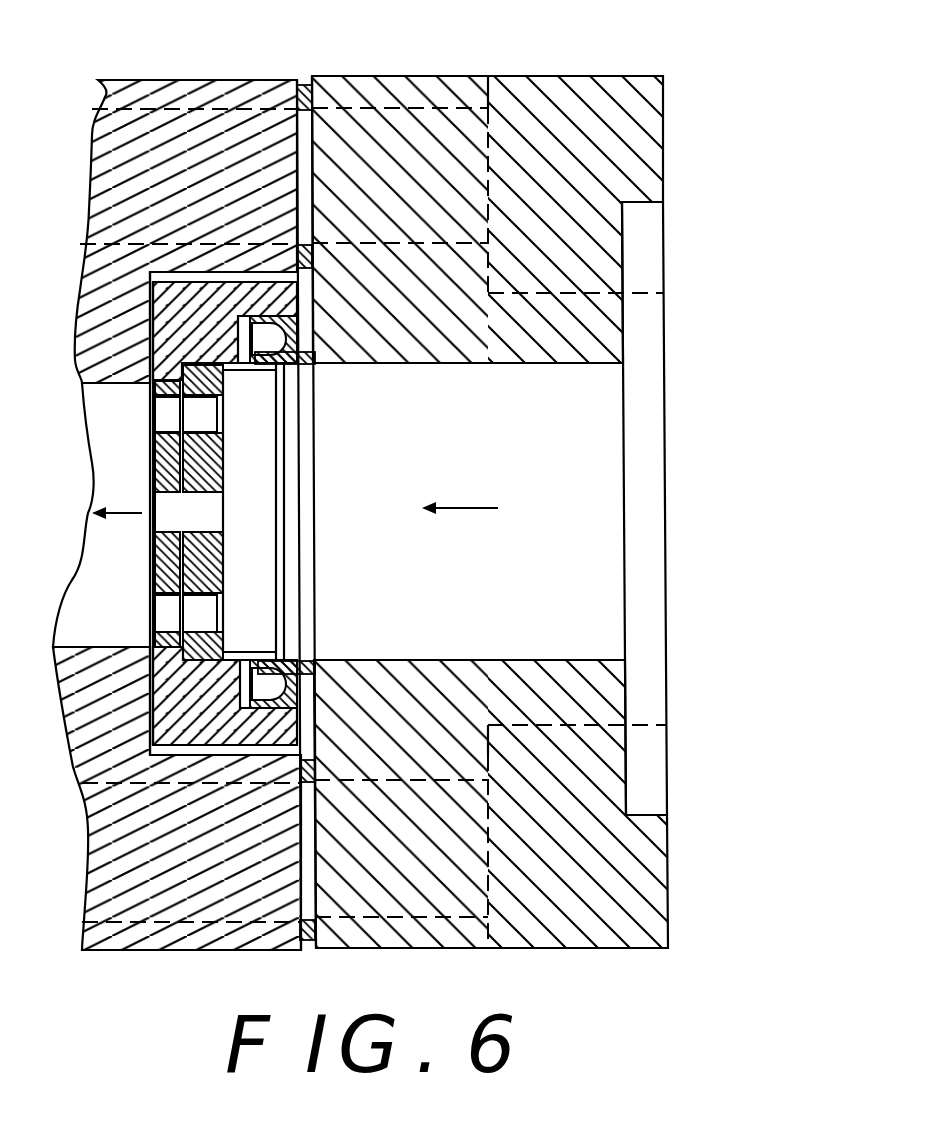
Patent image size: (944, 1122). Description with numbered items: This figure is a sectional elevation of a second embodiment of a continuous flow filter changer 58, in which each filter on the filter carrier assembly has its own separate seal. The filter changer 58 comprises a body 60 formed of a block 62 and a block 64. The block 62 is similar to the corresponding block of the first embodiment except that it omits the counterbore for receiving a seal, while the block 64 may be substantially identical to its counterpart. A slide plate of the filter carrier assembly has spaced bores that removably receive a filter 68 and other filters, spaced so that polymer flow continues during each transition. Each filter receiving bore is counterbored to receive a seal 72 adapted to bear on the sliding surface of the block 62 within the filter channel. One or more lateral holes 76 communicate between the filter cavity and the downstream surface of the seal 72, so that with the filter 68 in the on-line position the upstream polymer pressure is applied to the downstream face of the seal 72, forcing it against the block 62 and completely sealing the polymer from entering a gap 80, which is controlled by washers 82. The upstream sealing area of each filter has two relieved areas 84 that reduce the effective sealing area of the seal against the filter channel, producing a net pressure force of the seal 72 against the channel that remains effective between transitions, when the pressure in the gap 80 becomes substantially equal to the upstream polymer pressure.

The continuous flow filter changer 58 is at (712, 169).
The body 60 is at (665, 107).
The block 62 is at (450, 78).
The block 64 is at (222, 80).
The filter 68 is at (267, 650).
The seal 72 is at (295, 368).
The lateral hole 76 is at (247, 372).
The gap 80 is at (307, 128).
The washer 82 is at (303, 82).
The relieved area 84 is at (307, 323).